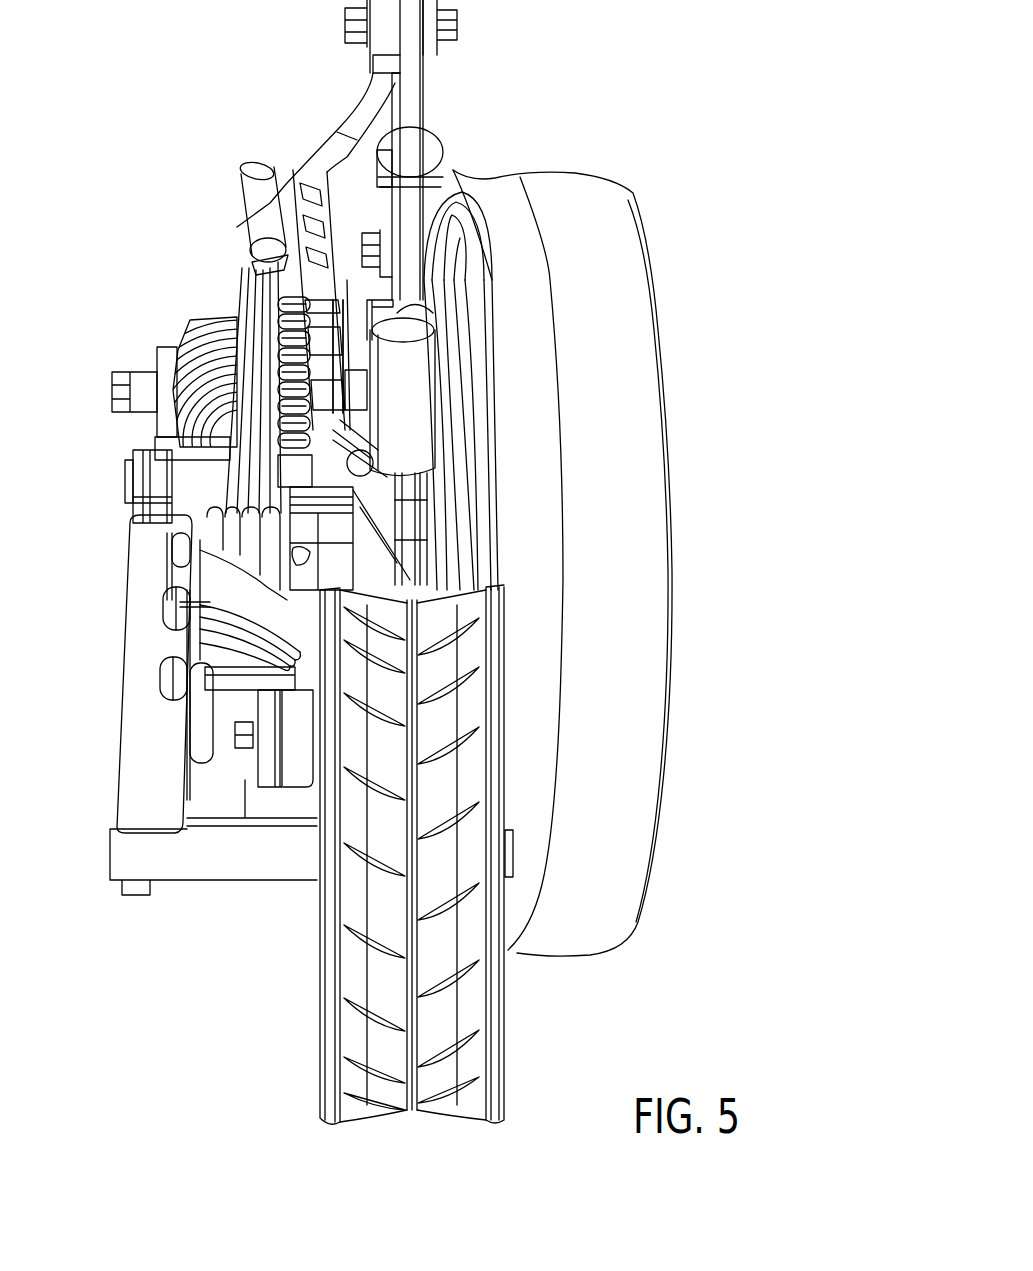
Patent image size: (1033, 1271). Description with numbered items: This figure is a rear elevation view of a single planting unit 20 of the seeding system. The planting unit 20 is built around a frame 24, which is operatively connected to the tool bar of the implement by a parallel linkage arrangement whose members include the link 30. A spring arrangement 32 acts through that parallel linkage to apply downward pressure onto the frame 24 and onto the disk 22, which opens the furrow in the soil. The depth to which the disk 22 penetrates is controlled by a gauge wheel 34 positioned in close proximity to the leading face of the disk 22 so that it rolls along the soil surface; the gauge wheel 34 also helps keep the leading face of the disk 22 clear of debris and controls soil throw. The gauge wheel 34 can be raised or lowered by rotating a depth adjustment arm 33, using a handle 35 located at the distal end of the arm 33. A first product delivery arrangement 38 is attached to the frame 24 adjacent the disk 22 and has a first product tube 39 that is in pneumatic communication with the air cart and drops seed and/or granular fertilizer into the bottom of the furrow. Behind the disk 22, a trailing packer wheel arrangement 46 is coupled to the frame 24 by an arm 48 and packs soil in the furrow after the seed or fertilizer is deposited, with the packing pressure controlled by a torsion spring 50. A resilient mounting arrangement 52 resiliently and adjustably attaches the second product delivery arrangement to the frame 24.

The planting unit 20 is at (490, 148).
The disk 22 is at (440, 493).
The frame 24 is at (367, 103).
The link 30 is at (413, 97).
The spring arrangement 32 is at (217, 367).
The depth adjustment arm 33 is at (257, 270).
The gauge wheel 34 is at (630, 552).
The handle 35 is at (260, 203).
The first product delivery arrangement 38 is at (413, 373).
The first product tube 39 is at (420, 403).
The trailing packer wheel arrangement 46 is at (473, 1003).
The arm 48 is at (147, 760).
The torsion spring 50 is at (227, 640).
The resilient mounting arrangement 52 is at (243, 758).